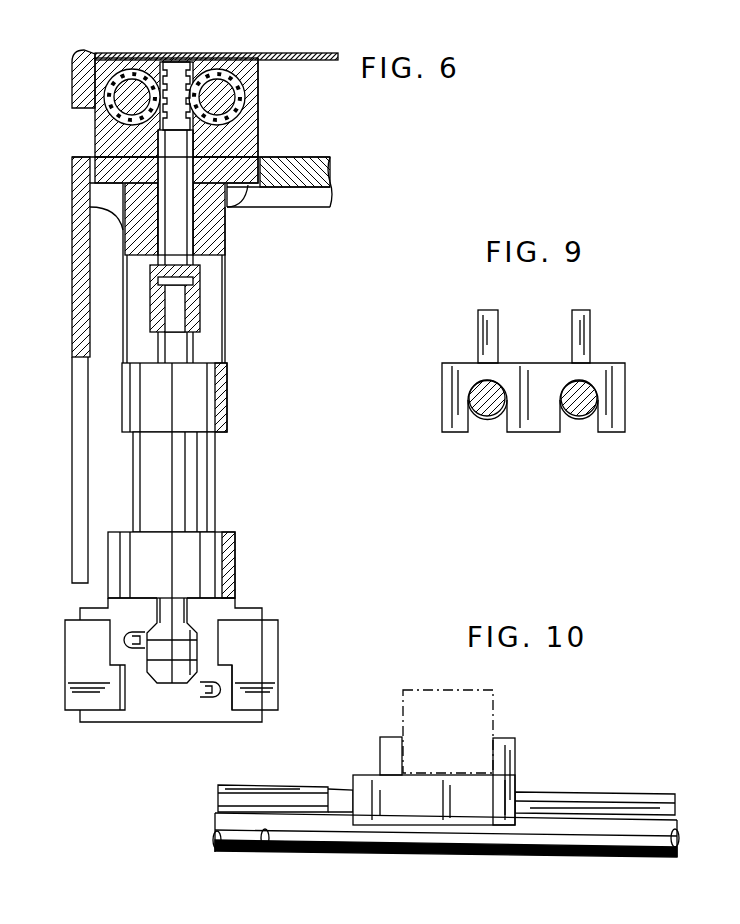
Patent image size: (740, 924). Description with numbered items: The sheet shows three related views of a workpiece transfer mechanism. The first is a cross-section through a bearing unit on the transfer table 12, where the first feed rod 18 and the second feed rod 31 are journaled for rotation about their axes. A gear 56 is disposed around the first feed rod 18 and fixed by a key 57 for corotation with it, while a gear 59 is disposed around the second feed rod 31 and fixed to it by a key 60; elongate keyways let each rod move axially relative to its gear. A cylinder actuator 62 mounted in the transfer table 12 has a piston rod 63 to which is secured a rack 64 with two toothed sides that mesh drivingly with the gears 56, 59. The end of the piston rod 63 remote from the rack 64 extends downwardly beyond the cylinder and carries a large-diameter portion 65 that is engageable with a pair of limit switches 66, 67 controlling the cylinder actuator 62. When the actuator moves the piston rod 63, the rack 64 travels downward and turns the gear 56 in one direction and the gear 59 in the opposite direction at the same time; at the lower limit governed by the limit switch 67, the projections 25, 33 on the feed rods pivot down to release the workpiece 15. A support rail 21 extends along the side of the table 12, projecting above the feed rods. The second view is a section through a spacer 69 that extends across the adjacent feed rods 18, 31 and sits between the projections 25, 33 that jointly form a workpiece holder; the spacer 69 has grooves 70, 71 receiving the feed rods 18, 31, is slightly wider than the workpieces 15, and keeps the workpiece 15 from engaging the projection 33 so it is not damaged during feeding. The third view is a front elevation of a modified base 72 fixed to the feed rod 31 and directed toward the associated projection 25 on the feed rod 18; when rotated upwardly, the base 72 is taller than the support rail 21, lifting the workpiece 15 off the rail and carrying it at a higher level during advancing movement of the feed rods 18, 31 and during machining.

In FIG. 6, the transfer table 12 is at (330, 172).
In FIG. 10, the workpiece 15 is at (445, 700).
In FIG. 6, the first feed rod 18 is at (110, 92).
In FIG. 9, the first feed rod 18 is at (575, 415).
In FIG. 10, the first feed rod 18 is at (225, 838).
In FIG. 6, the support rail 21 is at (75, 58).
In FIG. 10, the support rail 21 is at (610, 797).
In FIG. 9, the projection 25 is at (587, 322).
In FIG. 10, the projection 25 is at (382, 745).
In FIG. 6, the second feed rod 31 is at (240, 97).
In FIG. 9, the second feed rod 31 is at (494, 412).
In FIG. 10, the second feed rod 31 is at (305, 843).
In FIG. 9, the projection 33 is at (480, 322).
In FIG. 10, the projection 33 is at (515, 752).
In FIG. 6, the gear 56 is at (128, 68).
In FIG. 6, the key 57 is at (95, 140).
In FIG. 6, the gear 59 is at (222, 68).
In FIG. 6, the key 60 is at (258, 137).
In FIG. 6, the cylinder actuator 62 is at (215, 472).
In FIG. 6, the piston rod 63 is at (200, 330).
In FIG. 6, the rack 64 is at (176, 65).
In FIG. 6, the large-diameter portion 65 is at (170, 690).
In FIG. 6, the limit switch 66 is at (65, 662).
In FIG. 6, the limit switch 67 is at (278, 656).
In FIG. 9, the spacer 69 is at (530, 375).
In FIG. 9, the groove 70 is at (593, 425).
In FIG. 9, the groove 71 is at (474, 425).
In FIG. 10, the modified base 72 is at (440, 828).